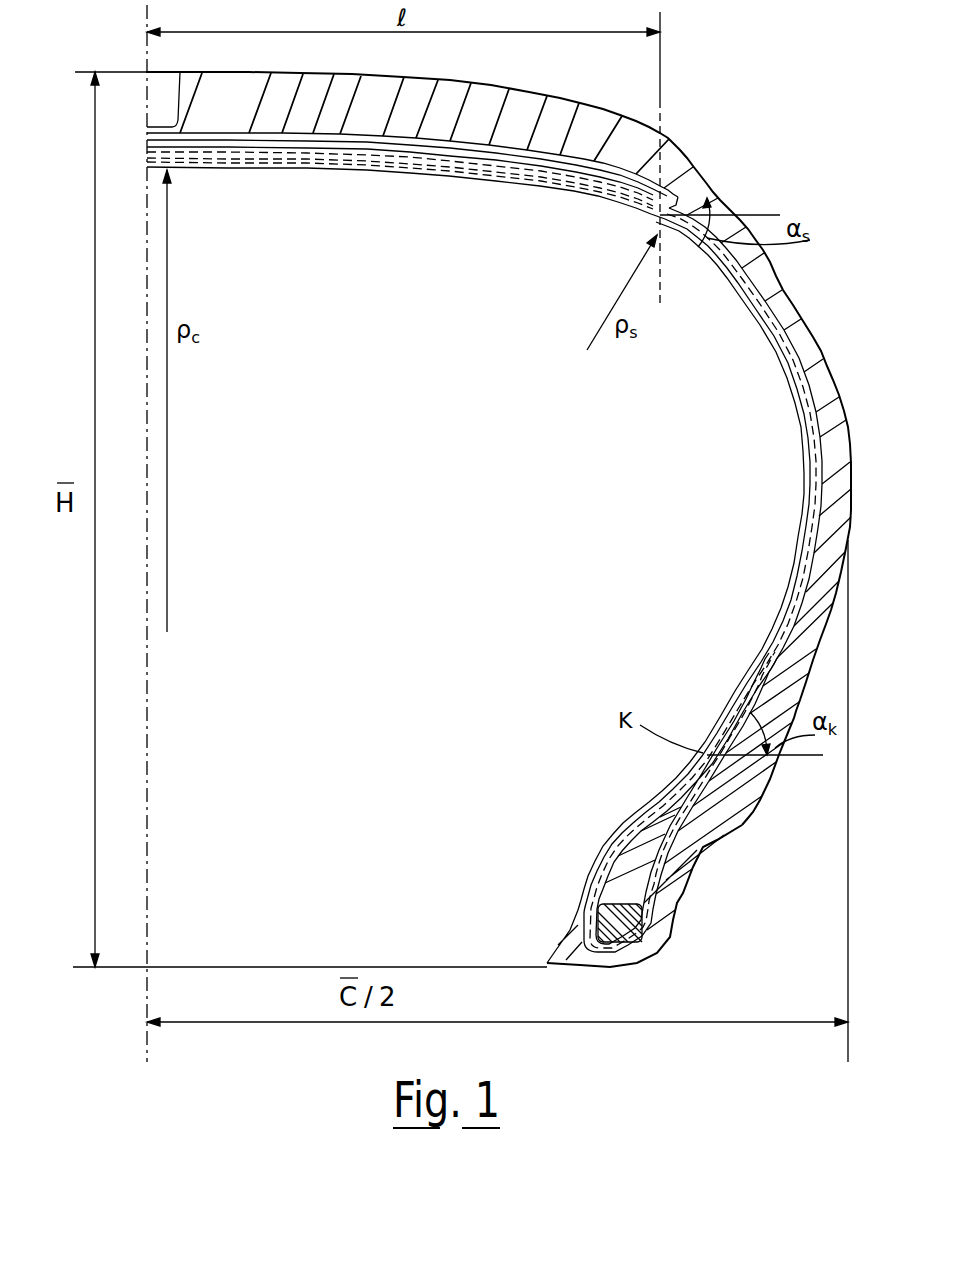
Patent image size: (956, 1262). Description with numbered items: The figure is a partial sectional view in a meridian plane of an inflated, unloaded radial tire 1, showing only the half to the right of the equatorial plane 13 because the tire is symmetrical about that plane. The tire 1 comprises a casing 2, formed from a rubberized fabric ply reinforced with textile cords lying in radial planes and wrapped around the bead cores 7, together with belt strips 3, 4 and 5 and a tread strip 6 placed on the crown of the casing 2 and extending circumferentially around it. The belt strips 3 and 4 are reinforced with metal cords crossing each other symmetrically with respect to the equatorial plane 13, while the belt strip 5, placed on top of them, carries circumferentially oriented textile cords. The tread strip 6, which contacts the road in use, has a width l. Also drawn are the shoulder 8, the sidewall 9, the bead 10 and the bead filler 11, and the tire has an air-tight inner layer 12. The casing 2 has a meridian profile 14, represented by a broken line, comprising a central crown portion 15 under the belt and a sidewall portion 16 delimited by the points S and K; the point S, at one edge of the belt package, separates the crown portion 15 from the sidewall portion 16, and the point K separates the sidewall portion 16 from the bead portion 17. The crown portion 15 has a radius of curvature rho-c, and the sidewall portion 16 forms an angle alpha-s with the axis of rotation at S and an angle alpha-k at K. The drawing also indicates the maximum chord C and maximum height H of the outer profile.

The tire 1 is at (680, 145).
The casing 2 is at (813, 377).
The belt strip 3 is at (603, 197).
The belt strip 4 is at (597, 177).
The belt strip 5 is at (530, 149).
The tread strip 6 is at (467, 80).
The bead core 7 is at (643, 960).
The shoulder 8 is at (677, 168).
The sidewall 9 is at (850, 477).
The bead 10 is at (677, 910).
The bead filler 11 is at (650, 820).
The air-tight inner layer (liner) 12 is at (773, 637).
The equatorial plane 13 is at (147, 708).
The meridian profile (plyline) 14 is at (537, 177).
The crown portion (under-belt) 15 is at (420, 167).
The sidewall portion 16 is at (813, 523).
The bead portion 17 is at (613, 843).